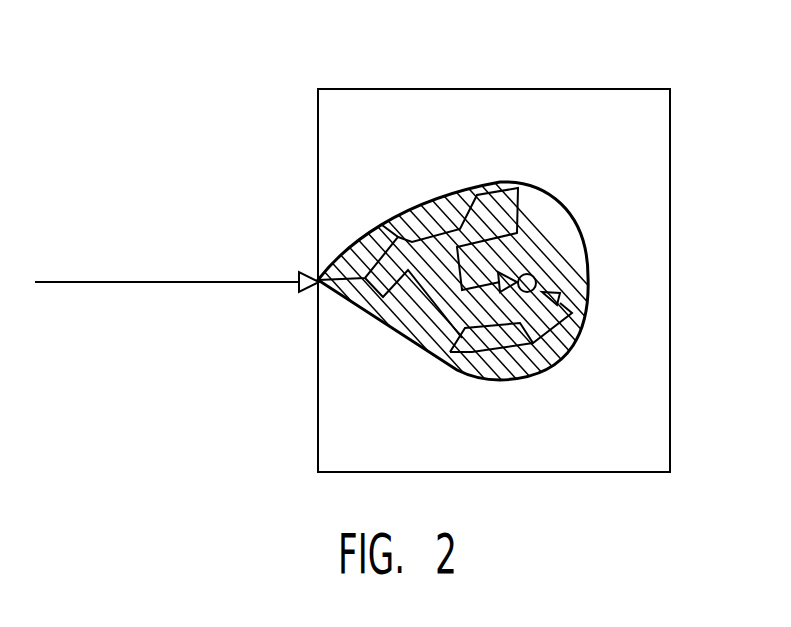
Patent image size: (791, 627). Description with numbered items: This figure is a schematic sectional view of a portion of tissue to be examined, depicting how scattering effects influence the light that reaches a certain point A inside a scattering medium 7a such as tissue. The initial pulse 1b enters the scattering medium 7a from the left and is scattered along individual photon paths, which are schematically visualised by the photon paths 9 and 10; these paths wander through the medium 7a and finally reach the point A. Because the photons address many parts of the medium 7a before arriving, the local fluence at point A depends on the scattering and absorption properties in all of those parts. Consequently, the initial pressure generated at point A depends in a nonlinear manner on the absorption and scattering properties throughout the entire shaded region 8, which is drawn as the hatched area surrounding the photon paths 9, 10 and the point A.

The initial pulse 1b is at (133, 282).
The scattering medium 7a is at (625, 117).
The shaded region 8 is at (575, 286).
The photon path 9 is at (381, 225).
The photon path 10 is at (450, 352).
The point A is at (532, 278).